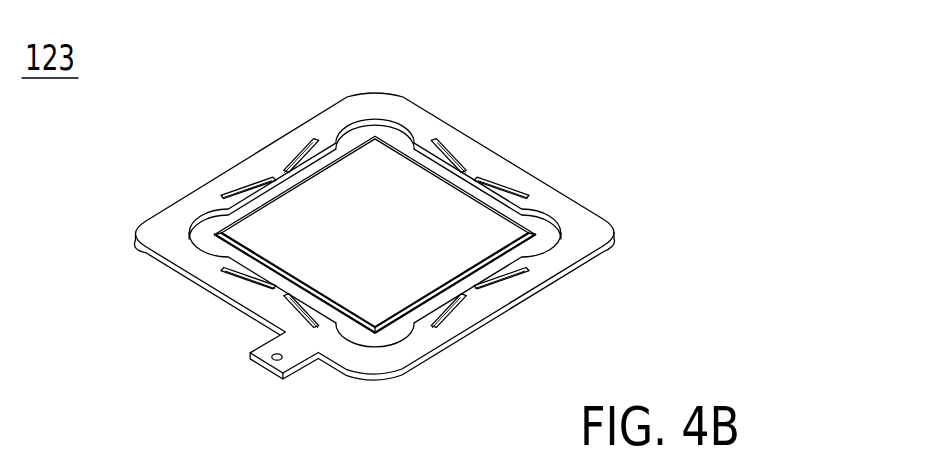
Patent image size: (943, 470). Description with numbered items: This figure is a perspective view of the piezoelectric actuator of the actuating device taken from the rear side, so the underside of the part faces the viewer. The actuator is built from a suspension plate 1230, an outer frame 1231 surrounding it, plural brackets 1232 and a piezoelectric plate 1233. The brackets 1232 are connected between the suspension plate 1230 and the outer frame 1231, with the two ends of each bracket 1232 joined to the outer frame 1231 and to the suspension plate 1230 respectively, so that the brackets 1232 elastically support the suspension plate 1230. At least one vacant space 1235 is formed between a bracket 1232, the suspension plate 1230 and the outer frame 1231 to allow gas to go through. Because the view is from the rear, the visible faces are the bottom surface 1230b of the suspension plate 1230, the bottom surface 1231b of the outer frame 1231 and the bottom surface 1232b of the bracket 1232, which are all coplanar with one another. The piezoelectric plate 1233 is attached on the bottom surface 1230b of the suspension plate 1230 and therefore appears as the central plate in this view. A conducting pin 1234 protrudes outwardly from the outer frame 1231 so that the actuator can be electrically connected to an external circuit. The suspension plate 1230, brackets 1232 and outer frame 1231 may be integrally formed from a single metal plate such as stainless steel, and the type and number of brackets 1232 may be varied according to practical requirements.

The suspension plate 1230 is at (353, 336).
The bottom surface of the suspension plate 1230b is at (393, 323).
The outer frame 1231 is at (620, 259).
The bottom surface of the outer frame 1231b is at (595, 232).
The bracket 1232 is at (287, 180).
The bottom surface of the bracket 1232b is at (270, 168).
The piezoelectric plate 1233 is at (415, 207).
The conducting pin 1234 is at (300, 354).
The vacant space 1235 is at (375, 130).